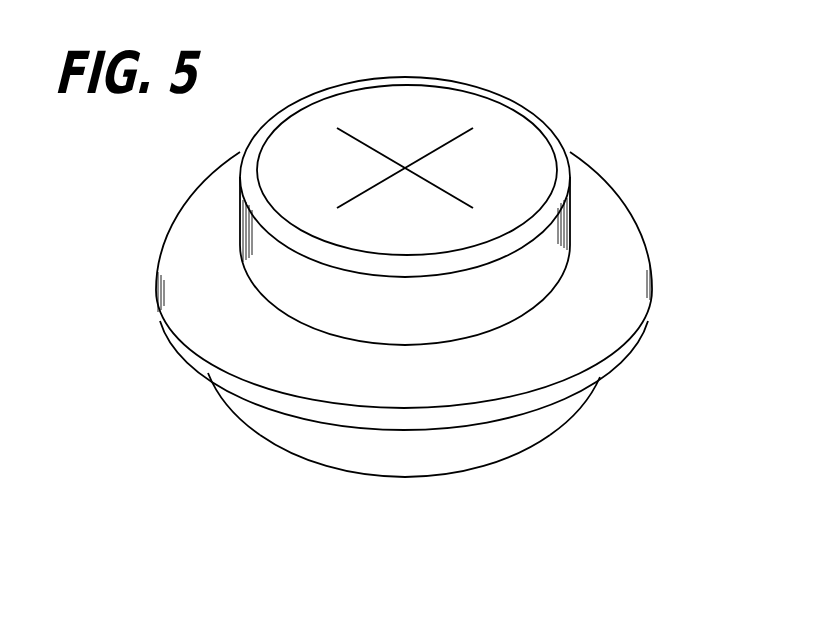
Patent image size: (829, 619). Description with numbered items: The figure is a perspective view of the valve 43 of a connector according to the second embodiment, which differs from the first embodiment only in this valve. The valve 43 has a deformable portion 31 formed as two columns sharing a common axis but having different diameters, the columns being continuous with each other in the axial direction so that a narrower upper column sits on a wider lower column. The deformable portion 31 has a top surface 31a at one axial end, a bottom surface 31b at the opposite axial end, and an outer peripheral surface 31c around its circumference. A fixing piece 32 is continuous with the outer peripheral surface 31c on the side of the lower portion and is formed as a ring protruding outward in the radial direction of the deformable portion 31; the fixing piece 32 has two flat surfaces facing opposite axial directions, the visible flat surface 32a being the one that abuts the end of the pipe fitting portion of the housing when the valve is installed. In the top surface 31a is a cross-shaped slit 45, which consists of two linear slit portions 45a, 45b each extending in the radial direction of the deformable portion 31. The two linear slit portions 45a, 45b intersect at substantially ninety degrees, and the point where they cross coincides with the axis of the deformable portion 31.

The deformable portion 31 is at (542, 114).
The top surface 31a is at (453, 100).
The bottom surface 31b is at (433, 478).
The outer peripheral surface 31c is at (560, 423).
The fixing piece 32 is at (156, 296).
The flat surface 32a is at (648, 230).
The valve 43 is at (648, 80).
The cross-shaped slit 45 is at (403, 131).
The linear slit portion 45a is at (375, 187).
The linear slit portion 45b is at (470, 186).